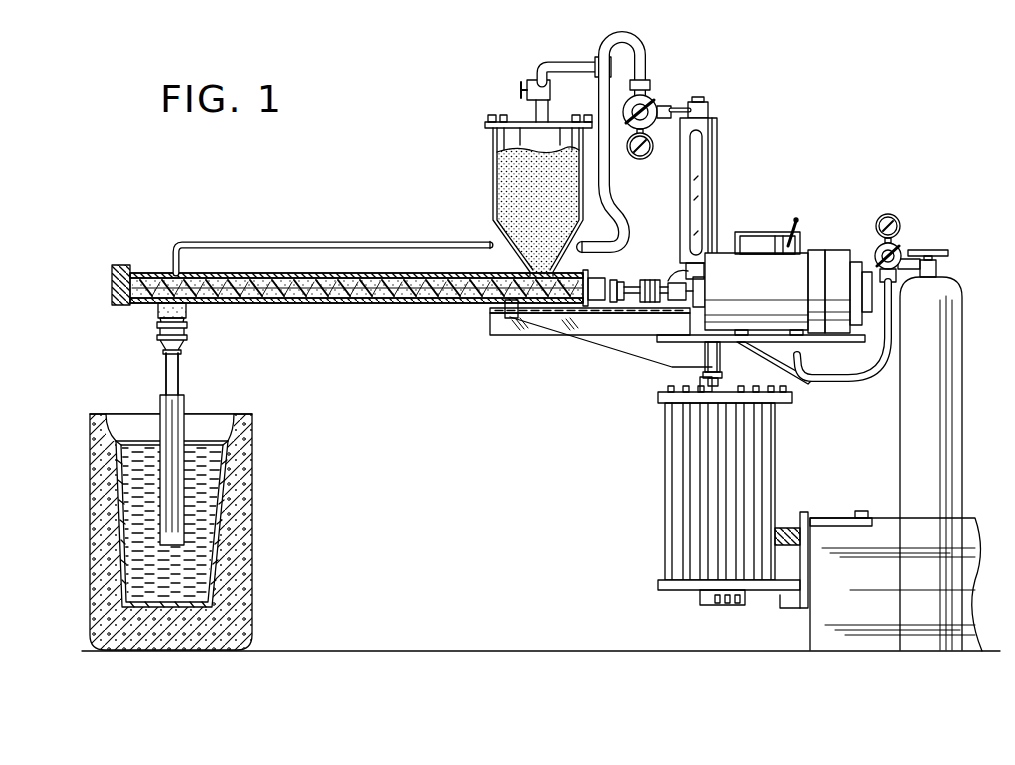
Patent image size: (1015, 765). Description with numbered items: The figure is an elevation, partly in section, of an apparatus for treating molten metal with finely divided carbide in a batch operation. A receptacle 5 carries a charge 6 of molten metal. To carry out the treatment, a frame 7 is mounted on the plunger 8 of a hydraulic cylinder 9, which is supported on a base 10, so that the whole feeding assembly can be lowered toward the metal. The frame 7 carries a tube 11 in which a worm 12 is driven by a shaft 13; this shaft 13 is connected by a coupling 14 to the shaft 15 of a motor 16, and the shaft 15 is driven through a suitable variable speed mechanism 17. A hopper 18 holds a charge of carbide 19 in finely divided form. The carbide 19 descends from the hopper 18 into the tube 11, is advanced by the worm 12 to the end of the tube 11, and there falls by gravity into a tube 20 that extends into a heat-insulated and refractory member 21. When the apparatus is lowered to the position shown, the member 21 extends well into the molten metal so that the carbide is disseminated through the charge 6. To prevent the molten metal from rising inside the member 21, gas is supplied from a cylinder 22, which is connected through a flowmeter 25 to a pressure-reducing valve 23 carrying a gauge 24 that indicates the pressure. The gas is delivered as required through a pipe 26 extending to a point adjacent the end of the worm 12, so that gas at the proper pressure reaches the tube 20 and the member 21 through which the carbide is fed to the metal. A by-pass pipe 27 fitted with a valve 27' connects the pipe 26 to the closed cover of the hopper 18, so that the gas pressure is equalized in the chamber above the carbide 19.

The receptacle 5 is at (250, 506).
The charge of molten metal 6 is at (220, 470).
The frame 7 is at (548, 336).
The plunger 8 is at (718, 374).
The hydraulic cylinder 9 is at (758, 456).
The base 10 is at (833, 536).
The tube 11 is at (410, 308).
The worm 12 is at (336, 305).
The shaft 13 is at (631, 283).
The coupling 14 is at (648, 280).
The motor shaft 15 is at (680, 282).
The motor 16 is at (812, 255).
The variable speed mechanism 17 is at (770, 233).
The hopper 18 is at (494, 176).
The carbide 19 is at (496, 198).
The tube 20 is at (182, 375).
The heat-insulated refractory member 21 is at (186, 405).
The gas cylinder 22 is at (905, 396).
The pressure-reducing valve 23 is at (650, 100).
The gauge 24 is at (638, 159).
The flowmeter 25 is at (712, 143).
The pipe 26 is at (618, 30).
The by-pass pipe 27 is at (570, 53).
The valve 27' is at (510, 91).